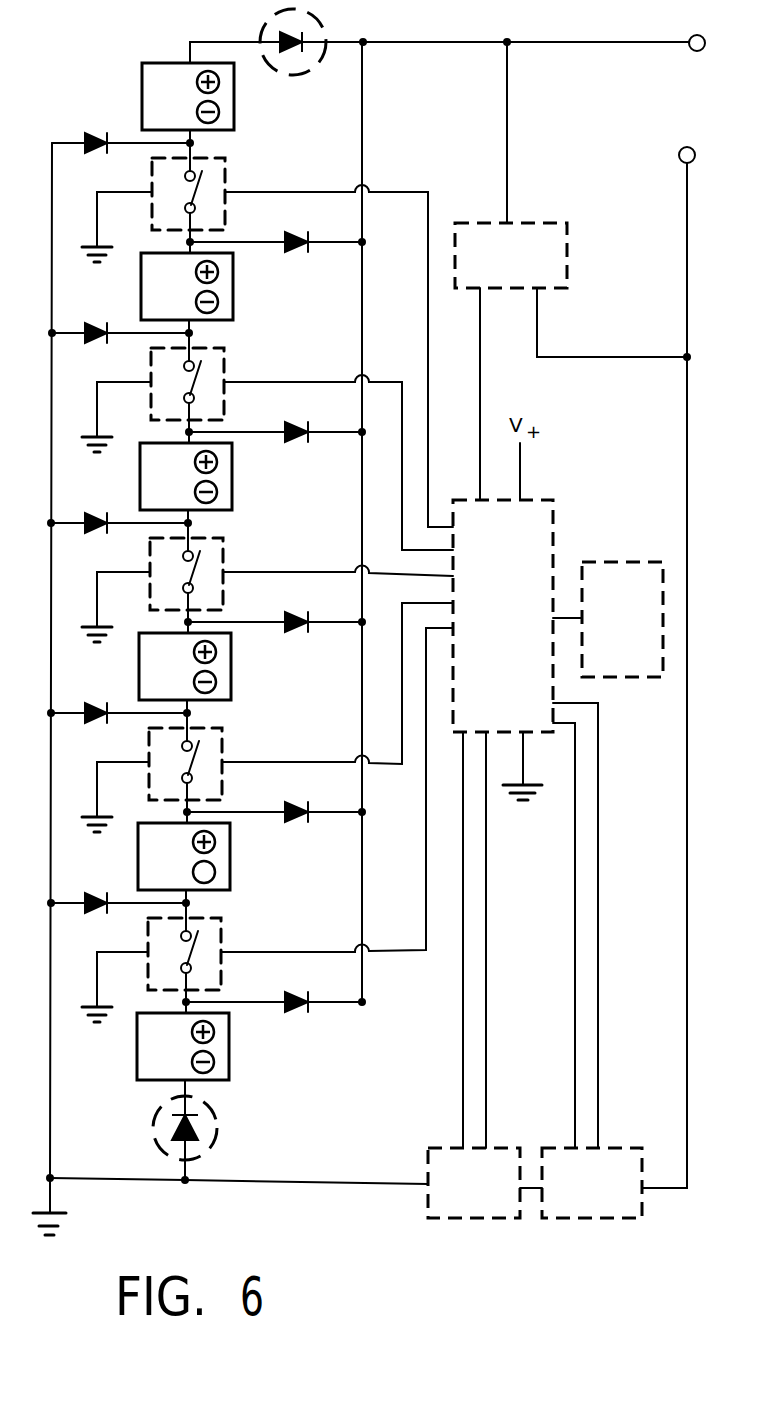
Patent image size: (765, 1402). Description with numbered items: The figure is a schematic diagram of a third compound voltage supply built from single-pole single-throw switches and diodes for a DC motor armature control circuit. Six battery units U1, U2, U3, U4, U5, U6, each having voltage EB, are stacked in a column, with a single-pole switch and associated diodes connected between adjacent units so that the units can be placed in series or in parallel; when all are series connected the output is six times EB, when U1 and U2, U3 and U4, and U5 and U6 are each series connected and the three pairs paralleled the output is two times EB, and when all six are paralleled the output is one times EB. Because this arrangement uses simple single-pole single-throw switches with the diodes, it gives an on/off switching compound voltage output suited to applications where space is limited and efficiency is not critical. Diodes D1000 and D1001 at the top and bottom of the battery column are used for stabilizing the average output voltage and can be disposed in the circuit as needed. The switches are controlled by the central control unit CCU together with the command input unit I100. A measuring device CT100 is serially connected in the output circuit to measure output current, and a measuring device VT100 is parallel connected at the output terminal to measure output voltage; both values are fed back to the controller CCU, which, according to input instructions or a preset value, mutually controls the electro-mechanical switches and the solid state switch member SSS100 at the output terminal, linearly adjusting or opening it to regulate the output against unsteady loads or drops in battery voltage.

The battery unit U1 is at (188, 96).
The battery unit U2 is at (187, 286).
The battery unit U3 is at (186, 476).
The battery unit U4 is at (185, 666).
The battery unit U5 is at (184, 856).
The battery unit U6 is at (183, 1046).
The diode D1000 is at (331, 40).
The diode D1001 is at (224, 1128).
The measuring device VT100 is at (511, 255).
The central control unit CCU is at (503, 616).
The command input unit I100 is at (622, 619).
The measuring device CT100 is at (474, 1183).
The solid state switch member SSS100 is at (592, 1183).